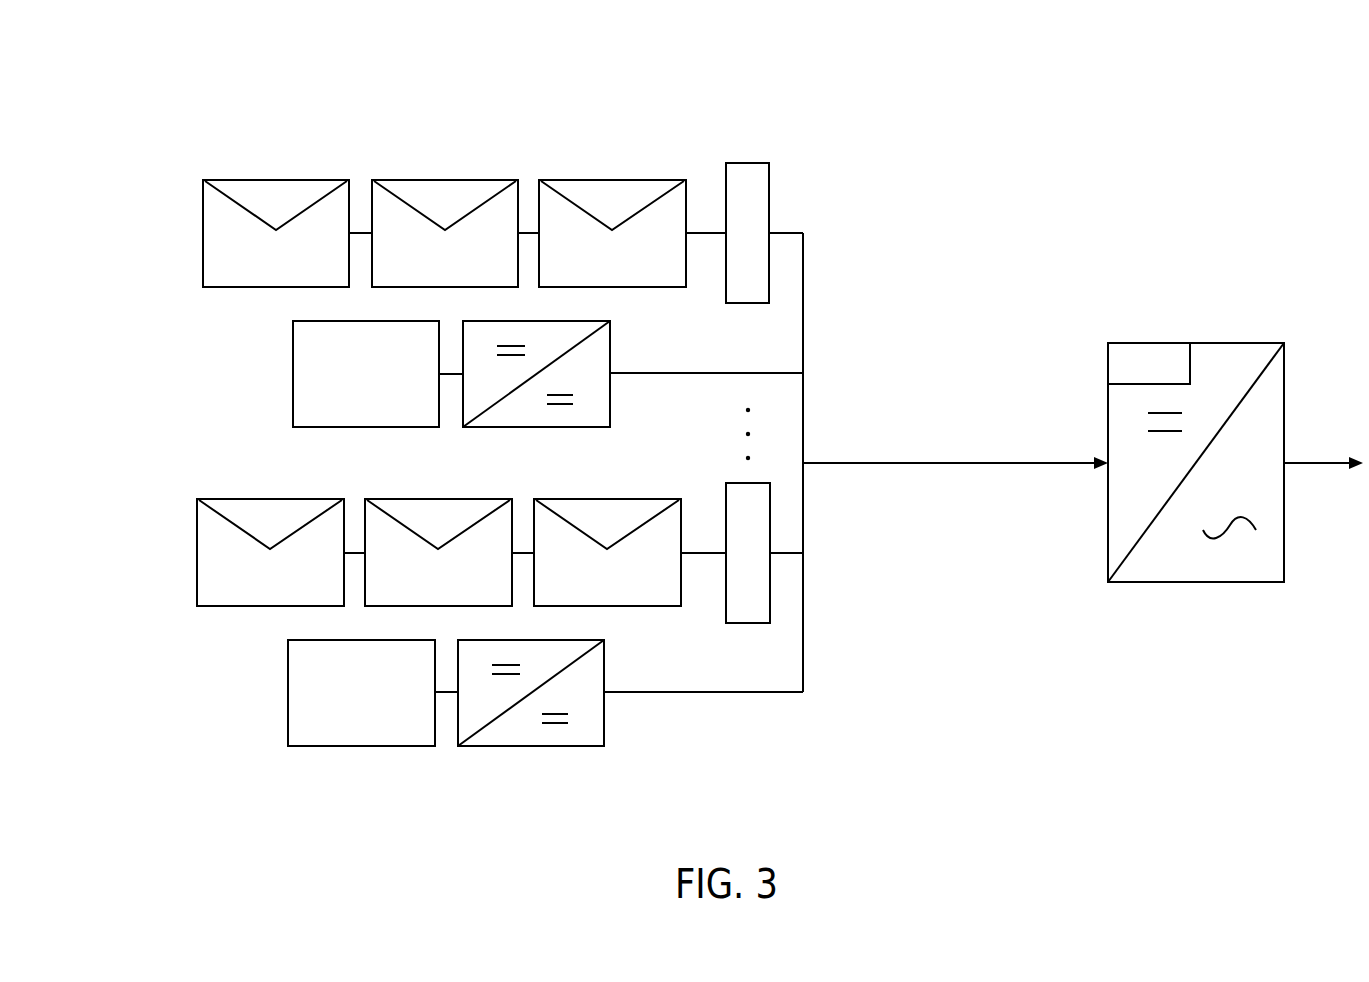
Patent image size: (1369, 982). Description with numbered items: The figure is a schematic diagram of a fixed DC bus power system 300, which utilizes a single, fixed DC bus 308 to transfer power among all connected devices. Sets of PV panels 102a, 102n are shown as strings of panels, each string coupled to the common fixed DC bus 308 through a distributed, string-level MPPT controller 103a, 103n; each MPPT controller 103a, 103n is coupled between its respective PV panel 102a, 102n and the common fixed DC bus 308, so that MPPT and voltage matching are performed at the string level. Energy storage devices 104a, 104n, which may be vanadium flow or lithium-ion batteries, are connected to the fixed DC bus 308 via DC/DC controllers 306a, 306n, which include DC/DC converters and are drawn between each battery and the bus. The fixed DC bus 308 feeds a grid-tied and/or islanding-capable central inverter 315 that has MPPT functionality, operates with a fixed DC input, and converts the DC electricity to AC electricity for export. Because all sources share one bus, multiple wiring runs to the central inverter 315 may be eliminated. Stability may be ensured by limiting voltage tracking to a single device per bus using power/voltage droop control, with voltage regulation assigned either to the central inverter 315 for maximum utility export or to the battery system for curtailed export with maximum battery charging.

The fixed DC bus power system 300 is at (182, 57).
The PV panel 102a is at (276, 180).
The PV panel 102n is at (269, 499).
The MPPT controller 103a is at (748, 163).
The MPPT controller 103n is at (747, 623).
The energy storage device 104a is at (293, 372).
The energy storage device 104n is at (362, 746).
The DC/DC controller 306a is at (611, 380).
The DC/DC controller 306n is at (530, 746).
The fixed DC bus 308 is at (1020, 462).
The central inverter 315 is at (1196, 582).